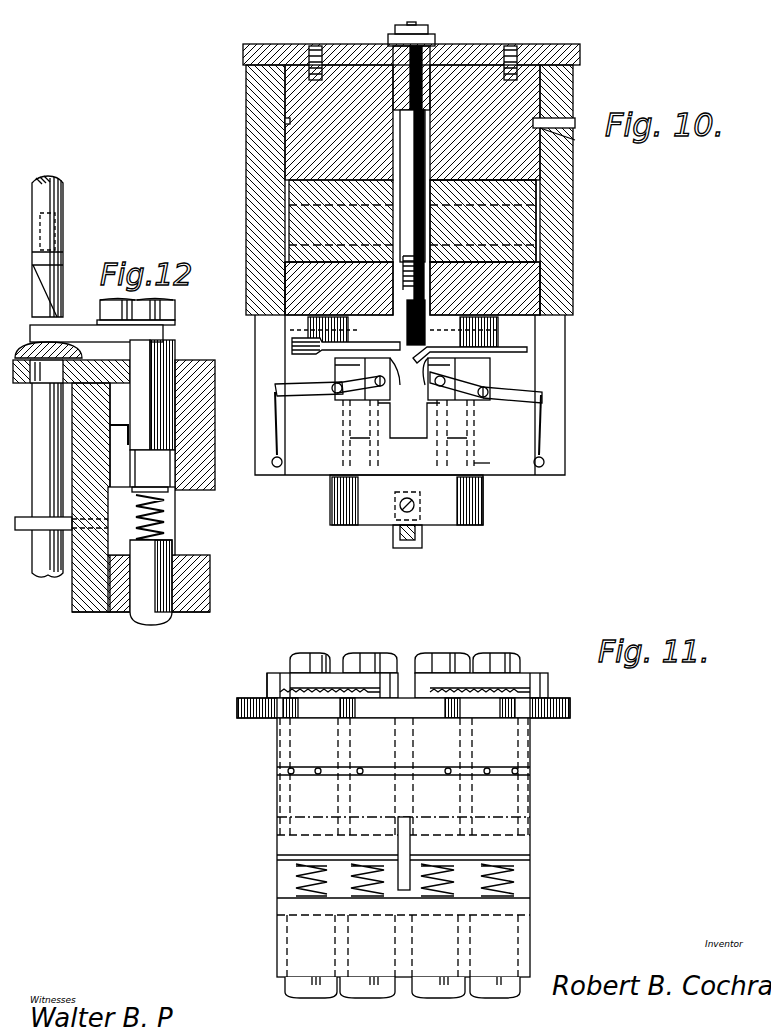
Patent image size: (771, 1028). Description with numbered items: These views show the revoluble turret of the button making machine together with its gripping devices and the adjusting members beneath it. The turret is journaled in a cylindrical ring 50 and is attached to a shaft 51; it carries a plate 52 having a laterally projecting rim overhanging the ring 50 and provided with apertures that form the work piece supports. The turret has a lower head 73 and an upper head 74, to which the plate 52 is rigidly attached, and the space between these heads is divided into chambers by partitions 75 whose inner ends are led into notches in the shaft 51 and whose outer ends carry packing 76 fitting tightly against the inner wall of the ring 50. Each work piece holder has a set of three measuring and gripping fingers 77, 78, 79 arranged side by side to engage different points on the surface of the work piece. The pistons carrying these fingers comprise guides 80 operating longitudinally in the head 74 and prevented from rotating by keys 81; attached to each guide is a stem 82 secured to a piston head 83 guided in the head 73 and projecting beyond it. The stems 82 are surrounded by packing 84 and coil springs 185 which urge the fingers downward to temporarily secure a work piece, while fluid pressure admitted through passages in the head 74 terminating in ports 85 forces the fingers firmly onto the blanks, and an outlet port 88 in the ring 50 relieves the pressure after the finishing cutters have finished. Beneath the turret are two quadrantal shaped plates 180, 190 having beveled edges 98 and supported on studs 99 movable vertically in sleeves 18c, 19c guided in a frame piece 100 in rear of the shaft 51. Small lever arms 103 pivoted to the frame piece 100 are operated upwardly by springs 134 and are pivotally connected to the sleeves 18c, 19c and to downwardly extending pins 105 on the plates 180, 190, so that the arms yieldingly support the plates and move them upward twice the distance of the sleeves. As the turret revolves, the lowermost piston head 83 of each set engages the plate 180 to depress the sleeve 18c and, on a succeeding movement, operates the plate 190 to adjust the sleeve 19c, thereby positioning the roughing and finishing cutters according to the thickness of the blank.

In FIG. 10, the cylindrical ring 50 is at (262, 85).
In FIG. 10, the shaft 51 is at (411, 183).
In FIG. 10, the plate 52 is at (285, 55).
In FIG. 10, the lower end or head 73 is at (485, 288).
In FIG. 11, the lower end or head 73 is at (530, 934).
In FIG. 10, the upper end or head 74 is at (510, 50).
In FIG. 10, the partitions 75 is at (483, 221).
In FIG. 10, the packing 76 is at (290, 220).
In FIG. 11, the packing 76 is at (408, 842).
In FIG. 12, the finger 77 is at (45, 330).
In FIG. 11, the finger 77 is at (280, 672).
In FIG. 12, the finger 78 is at (80, 330).
In FIG. 11, the finger 79 is at (325, 680).
In FIG. 12, the guides 80 is at (143, 486).
In FIG. 12, the keys 81 is at (150, 425).
In FIG. 12, the stem 82 is at (152, 470).
In FIG. 12, the piston head 83 is at (143, 600).
In FIG. 11, the piston head 83 is at (305, 990).
In FIG. 12, the packing 84 is at (168, 492).
In FIG. 10, the ports 85 is at (560, 133).
In FIG. 12, the ports 85 is at (105, 436).
In FIG. 11, the ports 85 is at (530, 772).
In FIG. 10, the outlet port 88 is at (573, 122).
In FIG. 10, the beveled edges 98 is at (292, 346).
In FIG. 10, the studs or pins 99 is at (445, 453).
In FIG. 10, the frame piece 100 is at (565, 468).
In FIG. 10, the lever arms 103 is at (312, 396).
In FIG. 10, the pins 105 is at (425, 366).
In FIG. 10, the springs 134 is at (280, 440).
In FIG. 10, the quadrantal shaped plate 180 is at (366, 370).
In FIG. 12, the coil springs 185 is at (164, 522).
In FIG. 11, the coil springs 185 is at (512, 892).
In FIG. 10, the quadrantal shaped plate 190 is at (448, 364).
In FIG. 10, the sleeve 18c is at (350, 330).
In FIG. 10, the sleeve 19c is at (497, 462).